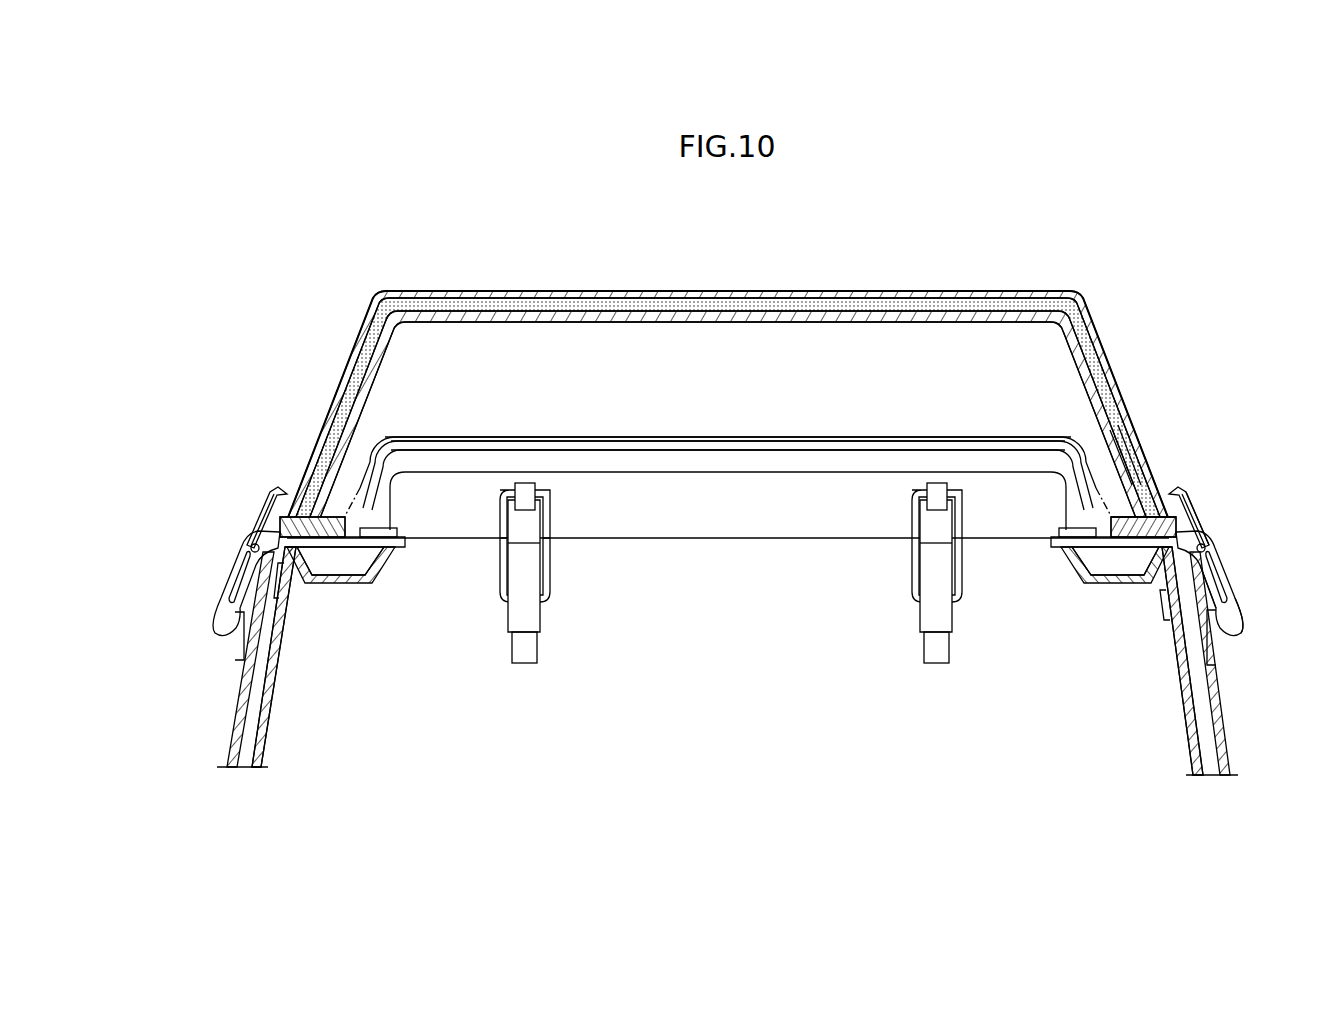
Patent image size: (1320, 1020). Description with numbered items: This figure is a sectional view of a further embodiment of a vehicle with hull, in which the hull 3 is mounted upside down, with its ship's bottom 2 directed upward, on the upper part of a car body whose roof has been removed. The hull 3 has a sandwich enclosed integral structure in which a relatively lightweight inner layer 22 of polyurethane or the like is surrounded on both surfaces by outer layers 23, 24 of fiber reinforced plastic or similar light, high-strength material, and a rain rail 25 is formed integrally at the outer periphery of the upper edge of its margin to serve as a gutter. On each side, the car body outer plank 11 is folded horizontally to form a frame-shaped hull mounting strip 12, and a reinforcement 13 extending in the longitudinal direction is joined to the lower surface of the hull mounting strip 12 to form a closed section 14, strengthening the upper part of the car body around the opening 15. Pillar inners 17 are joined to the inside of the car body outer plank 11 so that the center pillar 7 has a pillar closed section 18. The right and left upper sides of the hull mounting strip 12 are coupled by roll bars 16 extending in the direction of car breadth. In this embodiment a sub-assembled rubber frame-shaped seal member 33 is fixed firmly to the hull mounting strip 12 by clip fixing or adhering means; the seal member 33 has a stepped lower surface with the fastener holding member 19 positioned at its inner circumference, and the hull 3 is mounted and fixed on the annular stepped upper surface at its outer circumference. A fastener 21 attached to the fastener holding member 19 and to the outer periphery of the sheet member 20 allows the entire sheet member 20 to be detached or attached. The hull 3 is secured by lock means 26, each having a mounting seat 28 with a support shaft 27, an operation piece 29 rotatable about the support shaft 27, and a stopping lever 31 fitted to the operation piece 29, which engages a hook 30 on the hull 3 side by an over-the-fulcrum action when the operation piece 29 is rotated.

The ship's bottom 2 is at (660, 291).
The hull 3 is at (1094, 319).
The center pillar 7 is at (263, 726).
The car body outer plank 11 is at (235, 718).
The hull mounting strip 12 is at (350, 550).
The reinforcement 13 is at (322, 583).
The closed section 14 is at (373, 556).
The opening 15 is at (690, 538).
The roll bar 16 is at (731, 450).
The pillar inner 17 is at (272, 664).
The pillar closed section 18 is at (248, 752).
The fastener holding member 19 is at (1147, 470).
The sheet member 20 is at (789, 437).
The fastener 21 is at (1113, 468).
The inner layer 22 is at (524, 304).
The outer layer 23 is at (470, 291).
The outer layer 24 is at (490, 322).
The rain rail 25 is at (270, 514).
The lock means 26 is at (240, 557).
The support shaft 27 is at (1196, 555).
The mounting seat 28 is at (528, 648).
The operation piece 29 is at (512, 578).
The hook 30 is at (523, 496).
The stopping lever 31 is at (500, 508).
The seal member 33 is at (1168, 492).